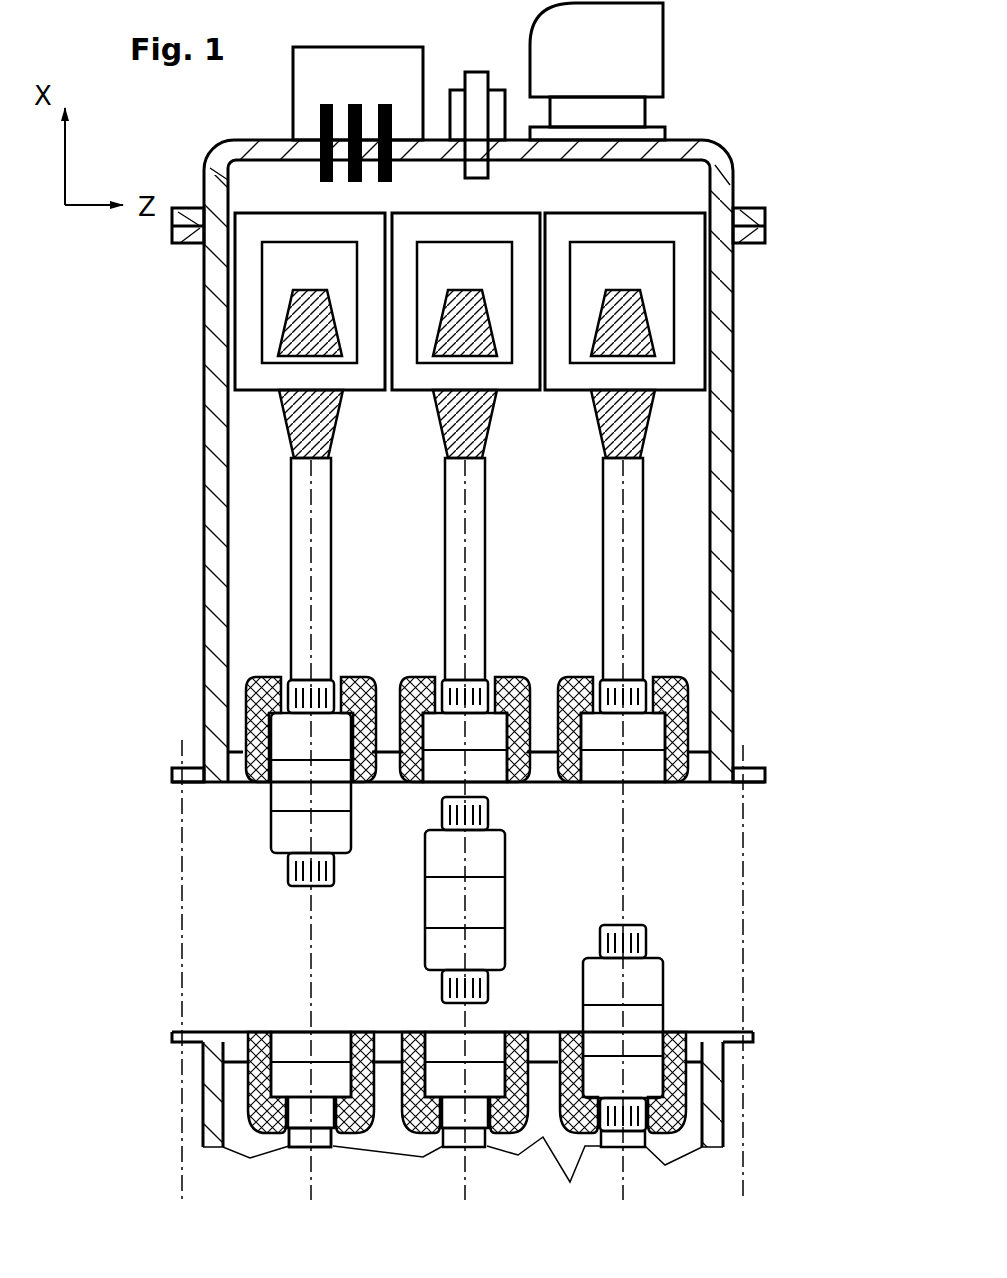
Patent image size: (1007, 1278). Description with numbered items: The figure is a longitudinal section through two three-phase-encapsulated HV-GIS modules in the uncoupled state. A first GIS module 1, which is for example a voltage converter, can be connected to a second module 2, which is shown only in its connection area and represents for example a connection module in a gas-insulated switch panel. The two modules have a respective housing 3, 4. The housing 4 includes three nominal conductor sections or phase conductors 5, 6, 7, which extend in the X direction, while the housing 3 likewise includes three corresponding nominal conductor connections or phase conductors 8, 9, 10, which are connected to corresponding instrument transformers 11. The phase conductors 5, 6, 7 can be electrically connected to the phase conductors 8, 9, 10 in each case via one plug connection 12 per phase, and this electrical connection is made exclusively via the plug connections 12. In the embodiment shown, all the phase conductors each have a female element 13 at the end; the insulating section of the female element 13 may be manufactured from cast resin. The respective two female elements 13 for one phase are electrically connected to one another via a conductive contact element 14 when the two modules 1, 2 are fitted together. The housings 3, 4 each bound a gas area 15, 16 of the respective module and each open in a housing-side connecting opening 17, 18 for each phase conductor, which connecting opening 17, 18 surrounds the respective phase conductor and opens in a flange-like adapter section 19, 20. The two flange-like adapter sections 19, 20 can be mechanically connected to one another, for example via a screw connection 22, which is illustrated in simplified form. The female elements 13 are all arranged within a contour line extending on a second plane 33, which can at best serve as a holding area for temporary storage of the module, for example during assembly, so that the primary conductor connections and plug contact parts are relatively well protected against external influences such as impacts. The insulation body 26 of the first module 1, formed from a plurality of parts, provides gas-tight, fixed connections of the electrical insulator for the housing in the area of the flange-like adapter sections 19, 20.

The first GIS module 1 is at (758, 147).
The second module 2 is at (158, 1103).
The housing 3 is at (715, 570).
The housing 4 is at (727, 1113).
The nominal conductor section 5 is at (300, 1145).
The nominal conductor section 6 is at (455, 1145).
The nominal conductor section 7 is at (612, 1147).
The nominal conductor connection 8 is at (332, 537).
The nominal conductor connection 9 is at (477, 532).
The nominal conductor connection 10 is at (640, 520).
The instrument transformer 11 is at (660, 408).
The plug connection 12 is at (755, 905).
The female element 13 is at (685, 695).
The contact element 14 is at (490, 902).
The gas area 15 is at (700, 527).
The gas area 16 is at (680, 1137).
The connecting opening 17 is at (257, 787).
The connecting opening 18 is at (265, 1027).
The flange-like adapter section 19 is at (768, 768).
The flange-like adapter section 20 is at (762, 1028).
The screw connection 22 is at (745, 833).
The insulation body 26 is at (358, 677).
The second plane 33 is at (203, 783).